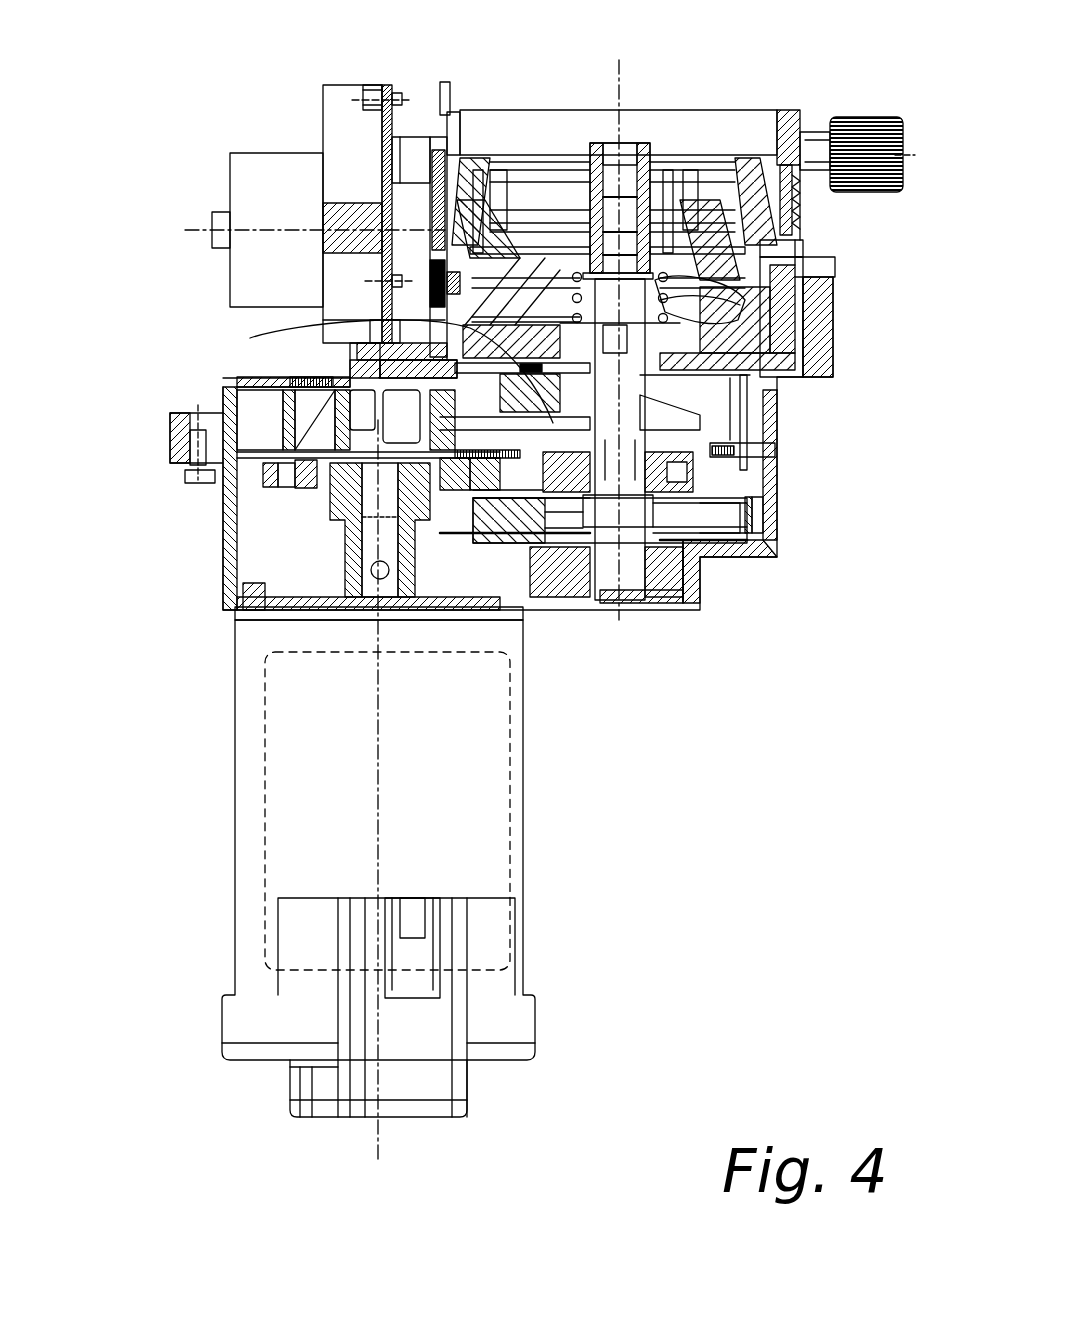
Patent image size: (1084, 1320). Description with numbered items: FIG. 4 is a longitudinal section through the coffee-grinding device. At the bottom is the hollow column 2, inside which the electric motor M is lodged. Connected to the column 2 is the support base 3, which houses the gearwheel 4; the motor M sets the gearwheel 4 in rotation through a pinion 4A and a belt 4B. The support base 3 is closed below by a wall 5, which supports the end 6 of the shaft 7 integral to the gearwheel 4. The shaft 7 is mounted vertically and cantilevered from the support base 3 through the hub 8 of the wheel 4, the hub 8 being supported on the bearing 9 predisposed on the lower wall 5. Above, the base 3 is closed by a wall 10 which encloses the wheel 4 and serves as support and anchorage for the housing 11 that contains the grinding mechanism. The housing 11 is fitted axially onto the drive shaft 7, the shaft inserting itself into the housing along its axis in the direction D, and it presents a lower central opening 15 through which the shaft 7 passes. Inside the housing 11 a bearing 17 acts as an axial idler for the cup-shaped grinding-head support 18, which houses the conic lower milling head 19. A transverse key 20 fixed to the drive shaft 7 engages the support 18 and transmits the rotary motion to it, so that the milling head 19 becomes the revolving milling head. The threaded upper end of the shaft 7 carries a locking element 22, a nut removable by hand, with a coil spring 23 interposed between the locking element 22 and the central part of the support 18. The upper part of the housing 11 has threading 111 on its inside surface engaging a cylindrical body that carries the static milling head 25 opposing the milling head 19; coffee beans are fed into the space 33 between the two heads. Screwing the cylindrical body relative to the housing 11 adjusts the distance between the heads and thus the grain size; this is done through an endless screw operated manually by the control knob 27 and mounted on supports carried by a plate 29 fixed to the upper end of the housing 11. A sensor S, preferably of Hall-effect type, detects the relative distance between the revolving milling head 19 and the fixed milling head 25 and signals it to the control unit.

The hollow column 2 is at (525, 820).
The support base 3 is at (228, 516).
The gearwheel 4 is at (733, 523).
The pinion 4A is at (343, 540).
The belt 4B is at (757, 512).
The wall 5 is at (687, 607).
The end 6 is at (630, 600).
The shaft 7 is at (628, 433).
The hub 8 is at (633, 550).
The bearing 9 is at (578, 577).
The wall 10 is at (245, 385).
The housing 11 is at (800, 230).
The lower central opening 15 is at (260, 338).
The bearing 17 is at (705, 385).
The grinding-head support 18 is at (555, 335).
The lower milling head 19 is at (440, 250).
The transverse key 20 is at (672, 290).
The locking element 22 is at (645, 300).
The coil spring 23 is at (602, 310).
The static milling head 25 is at (757, 273).
The control knob 27 is at (903, 180).
The plate 29 is at (350, 152).
The space 33 is at (700, 293).
The threading 111 is at (487, 300).
The sensor S is at (430, 272).
The electric motor M is at (523, 738).
The direction D is at (619, 14).